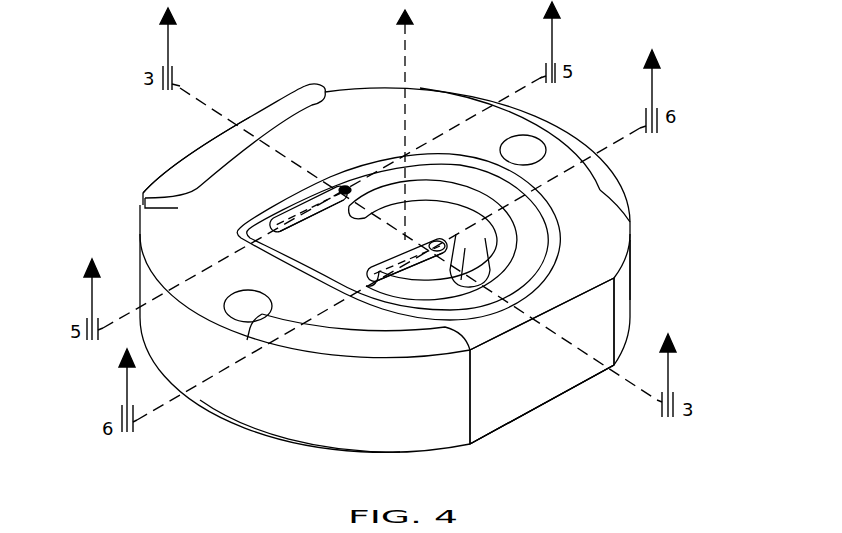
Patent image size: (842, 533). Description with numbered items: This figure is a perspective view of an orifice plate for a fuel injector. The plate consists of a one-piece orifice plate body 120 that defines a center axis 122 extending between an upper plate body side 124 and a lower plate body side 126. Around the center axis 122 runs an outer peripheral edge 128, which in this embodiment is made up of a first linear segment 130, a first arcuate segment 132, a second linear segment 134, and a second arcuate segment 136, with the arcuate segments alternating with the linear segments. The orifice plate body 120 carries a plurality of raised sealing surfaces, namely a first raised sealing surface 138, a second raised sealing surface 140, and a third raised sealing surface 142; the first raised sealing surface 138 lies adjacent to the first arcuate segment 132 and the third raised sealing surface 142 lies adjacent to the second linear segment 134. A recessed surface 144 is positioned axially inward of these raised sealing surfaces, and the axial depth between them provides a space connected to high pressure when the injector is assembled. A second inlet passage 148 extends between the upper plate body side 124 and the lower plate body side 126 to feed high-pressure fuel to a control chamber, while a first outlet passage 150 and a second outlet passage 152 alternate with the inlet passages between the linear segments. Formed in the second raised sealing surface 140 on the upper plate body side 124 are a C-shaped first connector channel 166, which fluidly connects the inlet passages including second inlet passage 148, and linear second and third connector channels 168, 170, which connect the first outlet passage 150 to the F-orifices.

The orifice plate body 120 is at (631, 226).
The center axis 122 is at (405, 48).
The upper plate body side 124 is at (625, 166).
The lower plate body side 126 is at (513, 426).
The outer peripheral edge 128 is at (636, 285).
The first linear segment 130 is at (563, 370).
The first arcuate segment 132 is at (283, 442).
The second linear segment 134 is at (160, 163).
The second arcuate segment 136 is at (545, 118).
The first raised sealing surface 138 is at (290, 102).
The second raised sealing surface 140 is at (367, 170).
The third raised sealing surface 142 is at (375, 352).
The recessed surface 144 is at (625, 200).
The second inlet passage 148 is at (473, 276).
The first outlet passage 150 is at (340, 190).
The second outlet passage 152 is at (417, 243).
The first connector channel 166 is at (460, 200).
The second connector channel 168 is at (307, 216).
The third connector channel 170 is at (405, 268).